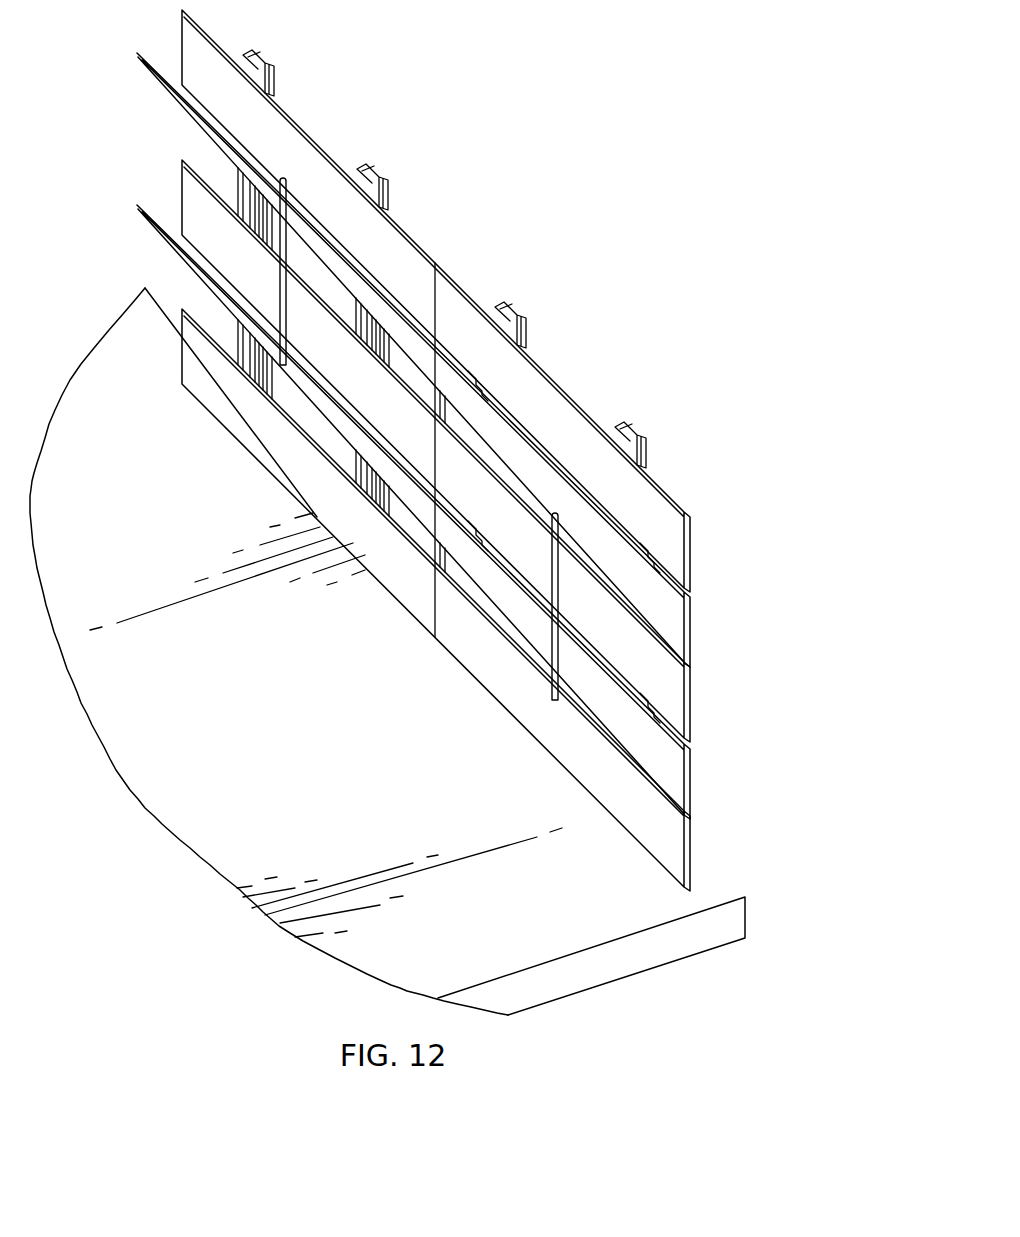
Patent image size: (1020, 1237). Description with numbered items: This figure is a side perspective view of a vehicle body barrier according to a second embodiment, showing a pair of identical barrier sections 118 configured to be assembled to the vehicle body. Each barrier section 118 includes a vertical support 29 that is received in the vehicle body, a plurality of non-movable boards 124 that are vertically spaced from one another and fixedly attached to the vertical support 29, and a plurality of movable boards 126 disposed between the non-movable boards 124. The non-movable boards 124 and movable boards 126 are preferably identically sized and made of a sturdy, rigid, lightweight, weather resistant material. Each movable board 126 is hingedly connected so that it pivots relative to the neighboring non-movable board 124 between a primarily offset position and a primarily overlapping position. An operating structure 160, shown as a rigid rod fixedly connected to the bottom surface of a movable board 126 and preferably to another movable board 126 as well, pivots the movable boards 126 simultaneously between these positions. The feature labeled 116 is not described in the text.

The vertical support 29 is at (276, 62).
The joint 116 is at (479, 392).
The barrier section 118 is at (362, 101).
The non-movable board 124 is at (181, 32).
The movable board 126 is at (148, 72).
The operating structure 160 is at (288, 290).